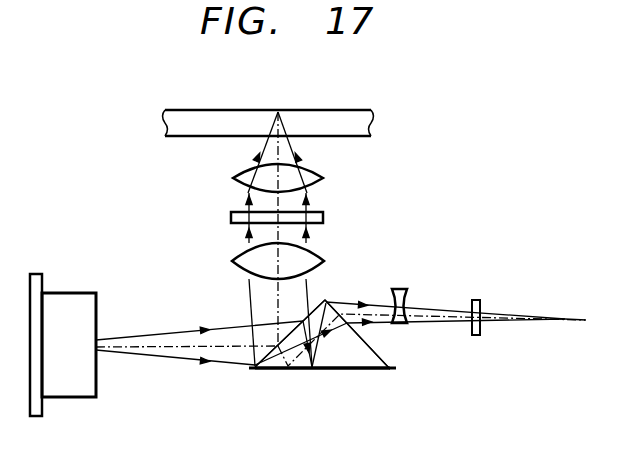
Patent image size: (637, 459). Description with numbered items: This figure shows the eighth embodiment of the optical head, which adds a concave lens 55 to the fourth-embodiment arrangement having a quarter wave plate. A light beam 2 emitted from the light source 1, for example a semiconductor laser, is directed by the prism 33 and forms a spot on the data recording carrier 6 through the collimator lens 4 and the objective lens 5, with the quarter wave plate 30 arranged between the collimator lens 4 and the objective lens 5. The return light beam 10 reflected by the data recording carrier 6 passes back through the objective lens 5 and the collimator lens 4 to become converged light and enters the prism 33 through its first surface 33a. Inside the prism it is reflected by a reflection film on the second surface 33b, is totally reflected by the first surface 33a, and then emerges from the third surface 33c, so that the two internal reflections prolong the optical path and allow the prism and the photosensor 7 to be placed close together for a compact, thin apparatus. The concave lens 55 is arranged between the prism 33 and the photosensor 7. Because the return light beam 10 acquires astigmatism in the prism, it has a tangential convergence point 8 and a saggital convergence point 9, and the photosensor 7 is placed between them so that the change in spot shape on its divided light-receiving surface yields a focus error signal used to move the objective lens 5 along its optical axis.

The light source 1 is at (66, 292).
The light beam 2 is at (186, 357).
The collimator lens 4 is at (325, 258).
The objective lens 5 is at (323, 178).
The data recording carrier 6 is at (214, 110).
The photosensor 7 is at (474, 300).
The tangential convergence point 8 is at (565, 318).
The saggital convergence point 9 is at (432, 310).
The return light beam 10 is at (351, 306).
The quarter wave plate 30 is at (324, 217).
The prism 33 is at (349, 343).
The first surface 33a is at (311, 304).
The second surface 33b is at (288, 372).
The third surface 33c is at (372, 346).
The concave lens 55 is at (400, 289).